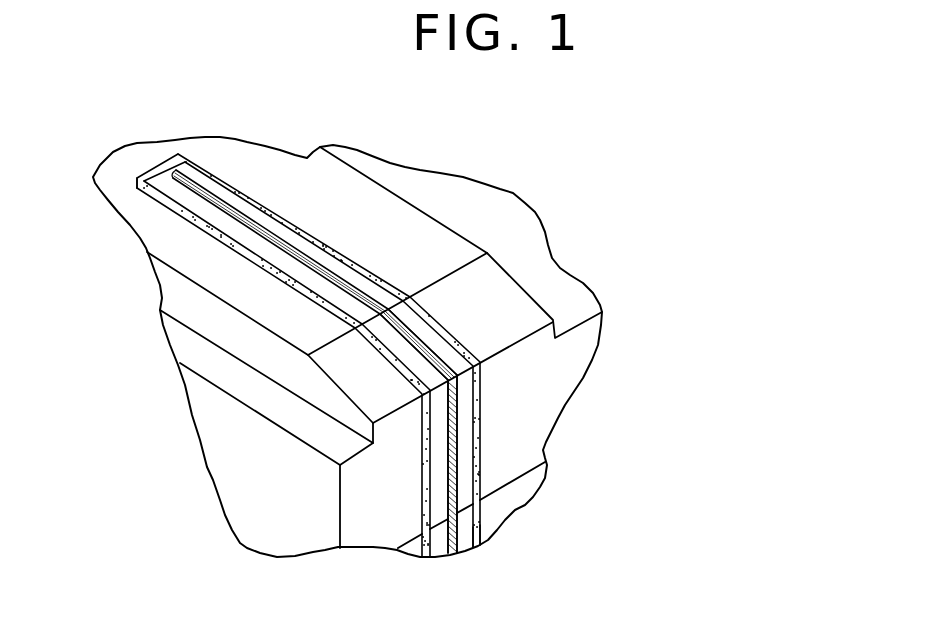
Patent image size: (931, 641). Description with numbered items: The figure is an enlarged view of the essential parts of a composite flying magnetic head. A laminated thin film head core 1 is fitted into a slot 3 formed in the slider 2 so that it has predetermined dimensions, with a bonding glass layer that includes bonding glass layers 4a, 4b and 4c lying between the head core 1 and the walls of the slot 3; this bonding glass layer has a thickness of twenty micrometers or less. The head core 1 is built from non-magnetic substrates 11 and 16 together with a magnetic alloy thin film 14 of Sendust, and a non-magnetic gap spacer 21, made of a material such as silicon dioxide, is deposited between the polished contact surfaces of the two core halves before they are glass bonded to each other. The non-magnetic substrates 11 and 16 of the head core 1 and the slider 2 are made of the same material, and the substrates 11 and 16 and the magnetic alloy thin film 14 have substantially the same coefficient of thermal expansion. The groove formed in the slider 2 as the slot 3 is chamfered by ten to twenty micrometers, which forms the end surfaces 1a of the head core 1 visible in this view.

The head core 1 is at (388, 393).
The end surfaces of the head core 1a is at (137, 182).
The slider 2 is at (552, 378).
The slot 3 is at (428, 482).
The bonding glass layer 4a is at (283, 217).
The bonding glass layer 4b is at (250, 256).
The bonding glass layer 4c is at (168, 152).
The non-magnetic substrate 11 is at (438, 549).
The magnetic alloy thin film 14 is at (453, 534).
The non-magnetic substrate 16 is at (467, 523).
The non-magnetic gap spacer 21 is at (356, 305).